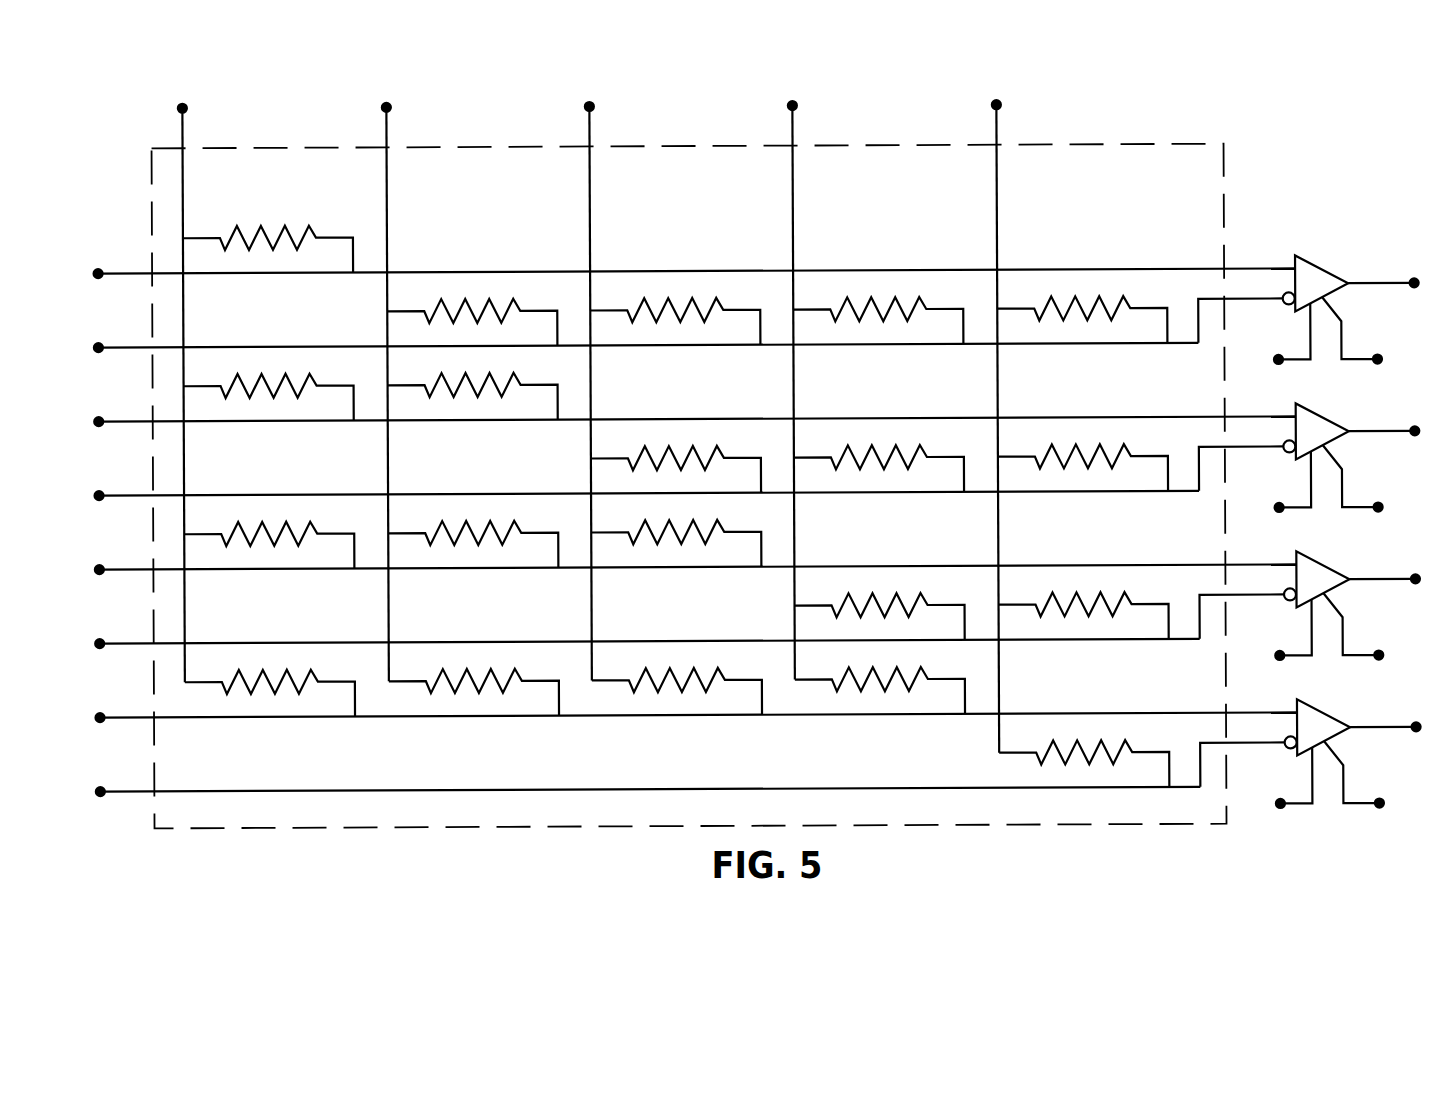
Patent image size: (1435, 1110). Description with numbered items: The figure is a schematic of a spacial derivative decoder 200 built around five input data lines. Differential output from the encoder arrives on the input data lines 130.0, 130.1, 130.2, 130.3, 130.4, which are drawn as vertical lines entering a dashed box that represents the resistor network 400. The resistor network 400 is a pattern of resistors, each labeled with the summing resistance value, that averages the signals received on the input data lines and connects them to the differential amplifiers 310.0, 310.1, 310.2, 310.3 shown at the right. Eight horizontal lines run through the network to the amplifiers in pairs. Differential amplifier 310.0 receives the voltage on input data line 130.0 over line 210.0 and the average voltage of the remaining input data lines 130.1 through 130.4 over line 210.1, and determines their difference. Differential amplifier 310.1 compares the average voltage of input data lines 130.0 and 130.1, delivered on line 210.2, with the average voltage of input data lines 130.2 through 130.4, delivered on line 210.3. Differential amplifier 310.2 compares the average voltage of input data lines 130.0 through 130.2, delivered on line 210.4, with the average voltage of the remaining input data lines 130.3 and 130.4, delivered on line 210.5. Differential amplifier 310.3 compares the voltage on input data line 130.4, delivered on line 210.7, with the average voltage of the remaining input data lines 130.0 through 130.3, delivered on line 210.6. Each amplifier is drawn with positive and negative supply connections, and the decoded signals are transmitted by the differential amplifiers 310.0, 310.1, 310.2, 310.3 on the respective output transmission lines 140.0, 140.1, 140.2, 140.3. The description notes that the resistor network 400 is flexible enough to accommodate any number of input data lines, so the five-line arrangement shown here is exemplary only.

The spacial derivative decoder 200 is at (1278, 108).
The resistor network 400 is at (1165, 143).
The input data line 130.0 is at (187, 127).
The input data line 130.1 is at (391, 127).
The input data line 130.2 is at (594, 127).
The input data line 130.3 is at (797, 127).
The input data line 130.4 is at (1001, 127).
The line 210.0 is at (120, 270).
The line 210.1 is at (120, 344).
The line 210.2 is at (120, 418).
The line 210.3 is at (120, 492).
The line 210.4 is at (120, 566).
The line 210.5 is at (120, 640).
The line 210.6 is at (120, 714).
The line 210.7 is at (120, 788).
The differential amplifier 310.0 is at (1326, 263).
The differential amplifier 310.1 is at (1326, 411).
The differential amplifier 310.2 is at (1326, 559).
The differential amplifier 310.3 is at (1326, 707).
The output transmission line 140.0 is at (1365, 280).
The output transmission line 140.1 is at (1365, 428).
The output transmission line 140.2 is at (1365, 576).
The output transmission line 140.3 is at (1365, 724).